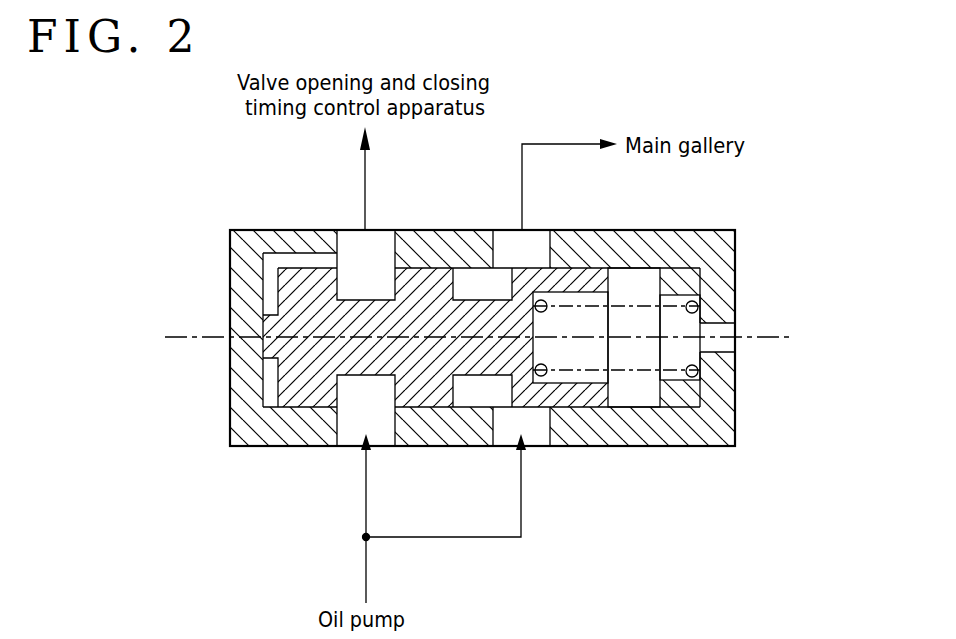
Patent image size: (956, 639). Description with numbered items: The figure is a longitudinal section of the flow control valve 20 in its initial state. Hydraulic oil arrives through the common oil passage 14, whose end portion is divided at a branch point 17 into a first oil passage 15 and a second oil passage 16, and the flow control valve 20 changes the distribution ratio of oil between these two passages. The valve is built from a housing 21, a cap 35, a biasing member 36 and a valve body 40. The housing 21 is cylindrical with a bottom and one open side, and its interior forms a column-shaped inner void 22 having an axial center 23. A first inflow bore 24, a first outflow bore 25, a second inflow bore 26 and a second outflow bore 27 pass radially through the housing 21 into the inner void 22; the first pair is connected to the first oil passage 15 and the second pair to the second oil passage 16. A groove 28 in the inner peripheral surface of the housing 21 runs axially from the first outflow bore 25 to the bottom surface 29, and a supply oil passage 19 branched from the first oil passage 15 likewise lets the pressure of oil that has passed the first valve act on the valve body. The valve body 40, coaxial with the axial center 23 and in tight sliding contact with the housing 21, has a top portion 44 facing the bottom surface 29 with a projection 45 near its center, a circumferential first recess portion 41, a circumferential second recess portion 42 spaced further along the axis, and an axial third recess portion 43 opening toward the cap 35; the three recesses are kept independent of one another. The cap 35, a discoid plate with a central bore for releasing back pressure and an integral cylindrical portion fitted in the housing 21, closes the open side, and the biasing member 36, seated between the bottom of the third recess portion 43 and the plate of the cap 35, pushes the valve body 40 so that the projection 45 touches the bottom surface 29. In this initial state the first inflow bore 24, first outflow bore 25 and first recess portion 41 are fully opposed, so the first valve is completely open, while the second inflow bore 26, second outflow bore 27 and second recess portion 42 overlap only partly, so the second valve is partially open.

The common oil passage 14 is at (367, 572).
The first oil passage 15 is at (367, 502).
The second oil passage 16 is at (522, 513).
The branch point 17 is at (364, 538).
The supply oil passage 19 is at (302, 255).
The flow control valve 20 is at (196, 207).
The housing 21 is at (230, 417).
The inner void 22 is at (640, 287).
The axial center 23 is at (766, 336).
The first inflow bore 24 is at (352, 437).
The first outflow bore 25 is at (380, 232).
The second inflow bore 26 is at (538, 437).
The second outflow bore 27 is at (507, 230).
The groove 28 is at (265, 257).
The bottom surface 29 is at (287, 388).
The cap 35 is at (737, 287).
The biasing member 36 is at (621, 372).
The valve body 40 is at (278, 382).
The first recess portion 41 is at (393, 392).
The second recess portion 42 is at (458, 392).
The third recess portion 43 is at (558, 290).
The top portion 44 is at (268, 290).
The projection 45 is at (270, 330).